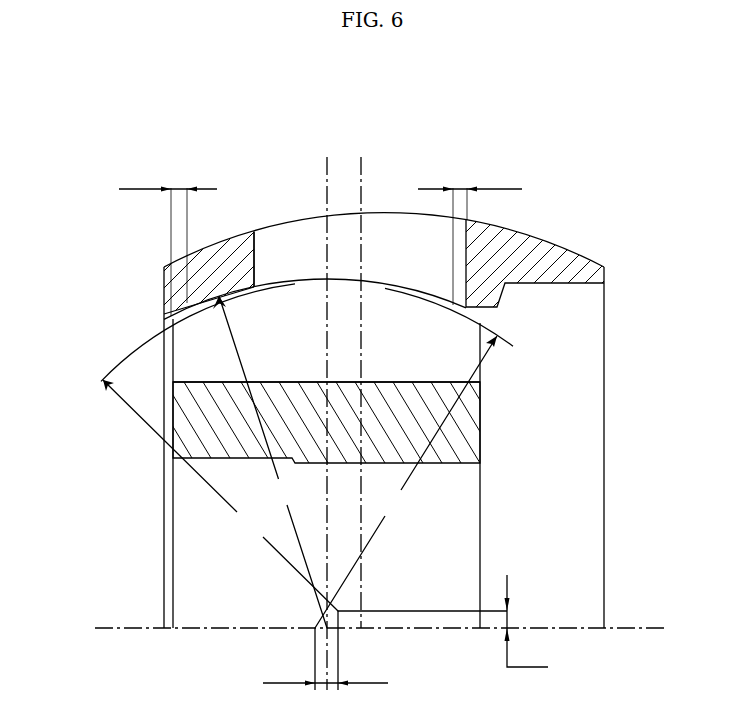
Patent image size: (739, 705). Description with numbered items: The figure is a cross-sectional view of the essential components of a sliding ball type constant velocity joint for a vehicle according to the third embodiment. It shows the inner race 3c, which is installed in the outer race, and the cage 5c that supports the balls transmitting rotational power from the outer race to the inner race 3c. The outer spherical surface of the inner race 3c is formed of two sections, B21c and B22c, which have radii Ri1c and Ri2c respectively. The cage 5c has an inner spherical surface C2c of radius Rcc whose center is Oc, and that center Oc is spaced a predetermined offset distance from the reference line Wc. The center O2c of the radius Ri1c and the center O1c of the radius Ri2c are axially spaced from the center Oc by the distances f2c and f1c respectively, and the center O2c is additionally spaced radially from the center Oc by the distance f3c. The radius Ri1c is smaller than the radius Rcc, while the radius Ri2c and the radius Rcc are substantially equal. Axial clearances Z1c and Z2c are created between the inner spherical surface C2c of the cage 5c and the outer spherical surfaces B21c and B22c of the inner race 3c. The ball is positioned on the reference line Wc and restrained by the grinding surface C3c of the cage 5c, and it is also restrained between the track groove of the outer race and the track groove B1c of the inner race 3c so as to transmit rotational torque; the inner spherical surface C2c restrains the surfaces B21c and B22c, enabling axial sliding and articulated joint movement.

The inner race 3c is at (183, 422).
The cage 5c is at (386, 396).
The track groove B1c is at (398, 382).
The outer spherical surface B21c is at (190, 318).
The outer spherical surface B22c is at (462, 314).
The inner spherical surface C2c is at (203, 297).
The grinding surface C3c is at (255, 257).
The reference line Wc is at (363, 183).
The axial clearance Z1c is at (168, 241).
The axial clearance Z2c is at (471, 236).
The radius of inner spherical surface Rcc is at (270, 462).
The radius of outer spherical surface section Ri1c is at (220, 495).
The radius of outer spherical surface section Ri2c is at (406, 482).
The center of radius Rcc Oc is at (324, 626).
The center of radius Ri2c O1c is at (313, 629).
The center of radius Ri1c O2c is at (340, 613).
The axial distance f1c is at (295, 659).
The axial distance f2c is at (357, 650).
The radial distance f3c is at (444, 621).